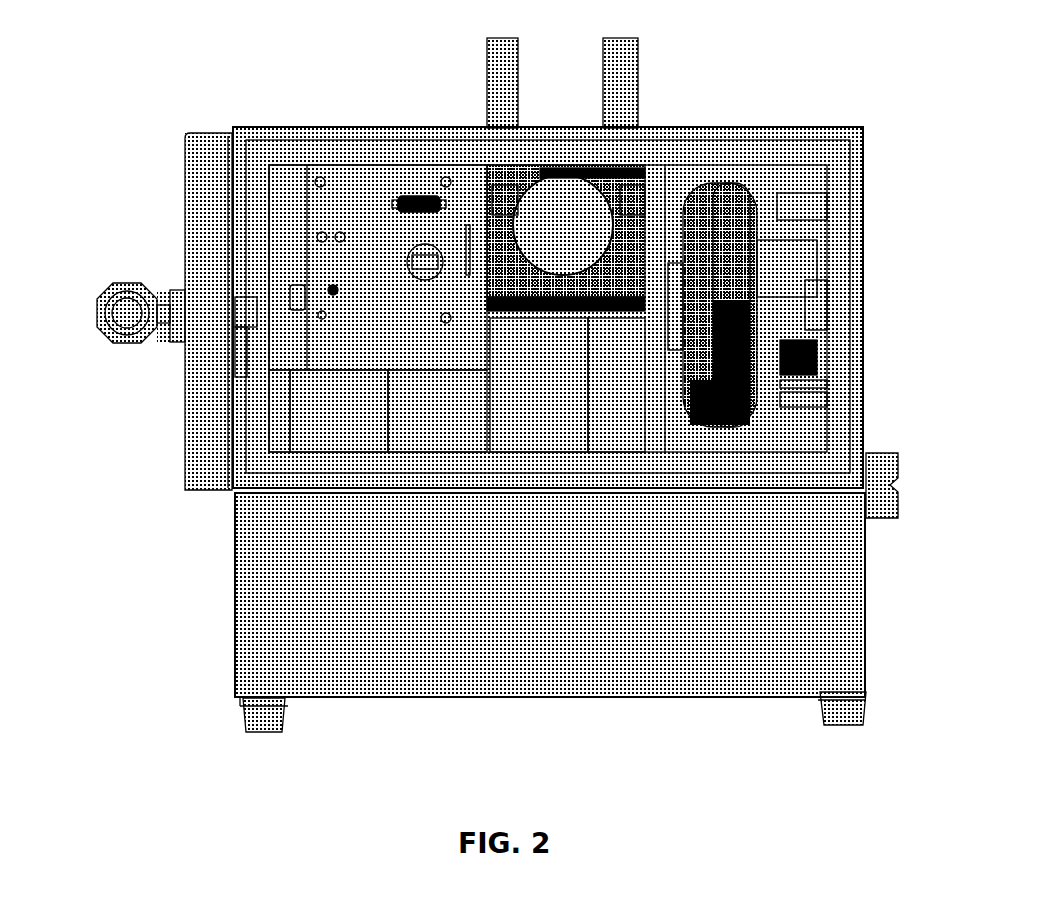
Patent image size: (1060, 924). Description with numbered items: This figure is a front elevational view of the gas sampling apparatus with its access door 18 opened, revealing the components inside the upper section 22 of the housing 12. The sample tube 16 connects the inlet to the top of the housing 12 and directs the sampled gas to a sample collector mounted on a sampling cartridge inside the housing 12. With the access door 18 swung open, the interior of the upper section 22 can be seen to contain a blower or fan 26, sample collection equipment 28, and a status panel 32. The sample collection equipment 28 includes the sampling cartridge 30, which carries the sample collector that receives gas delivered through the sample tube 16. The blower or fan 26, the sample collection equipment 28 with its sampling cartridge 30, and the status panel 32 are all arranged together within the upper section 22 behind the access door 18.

The housing 12 is at (872, 153).
The sample tube 16 is at (590, 101).
The access door 18 is at (172, 226).
The upper section 22 is at (878, 370).
The blower or fan 26 is at (772, 289).
The sample collection equipment 28 is at (653, 168).
The sampling cartridge 30 is at (506, 195).
The status panel 32 is at (365, 192).